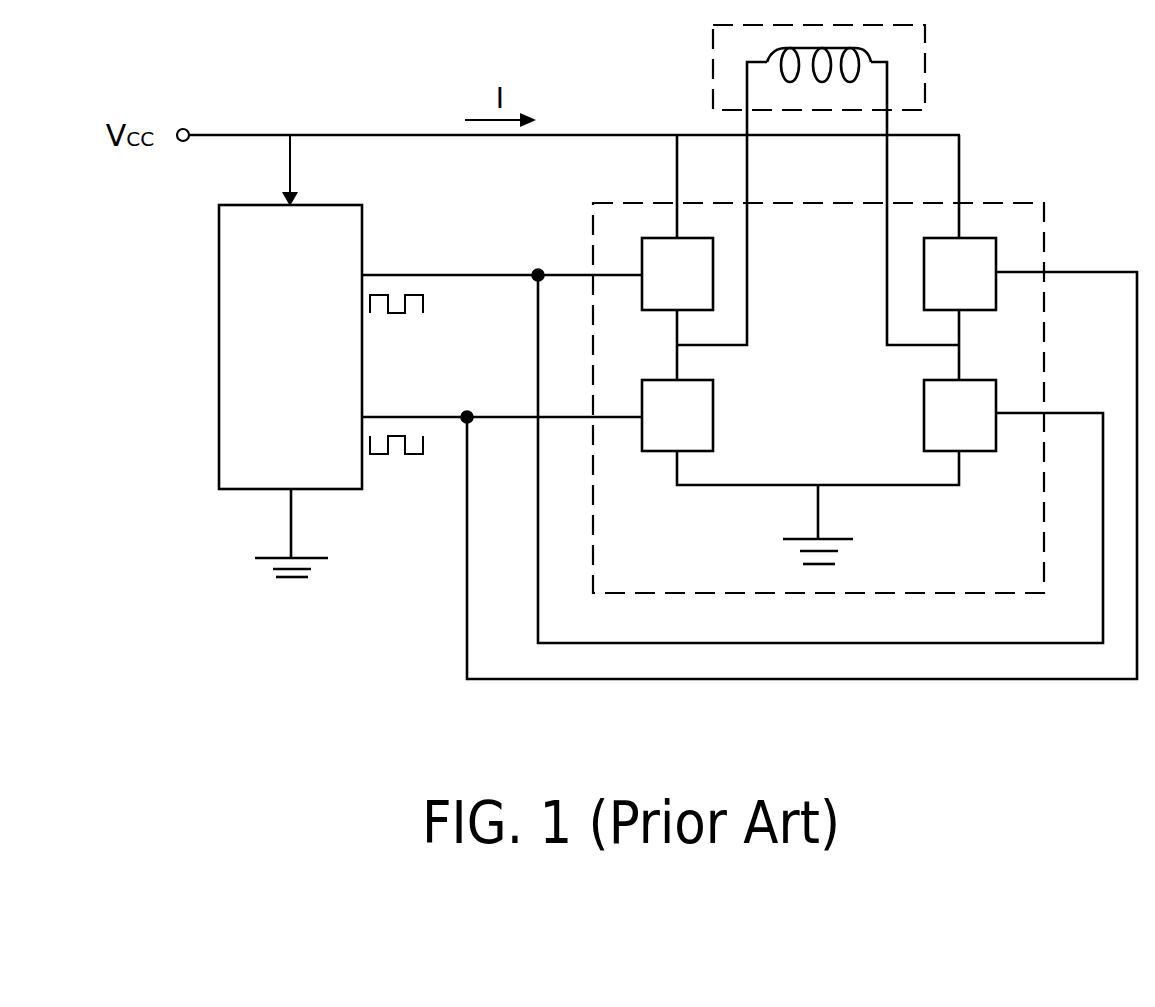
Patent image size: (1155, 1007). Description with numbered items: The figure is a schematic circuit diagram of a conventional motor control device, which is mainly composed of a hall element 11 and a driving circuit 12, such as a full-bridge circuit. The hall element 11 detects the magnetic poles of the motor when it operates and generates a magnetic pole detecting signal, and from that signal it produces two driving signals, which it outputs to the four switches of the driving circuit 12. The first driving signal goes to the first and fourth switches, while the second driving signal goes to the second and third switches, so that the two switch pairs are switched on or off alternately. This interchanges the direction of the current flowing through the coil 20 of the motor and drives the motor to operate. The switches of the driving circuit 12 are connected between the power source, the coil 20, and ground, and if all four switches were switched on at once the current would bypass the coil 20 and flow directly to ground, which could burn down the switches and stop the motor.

The hall element 11 is at (220, 330).
The driving circuit 12 is at (990, 203).
The coil 20 is at (925, 72).